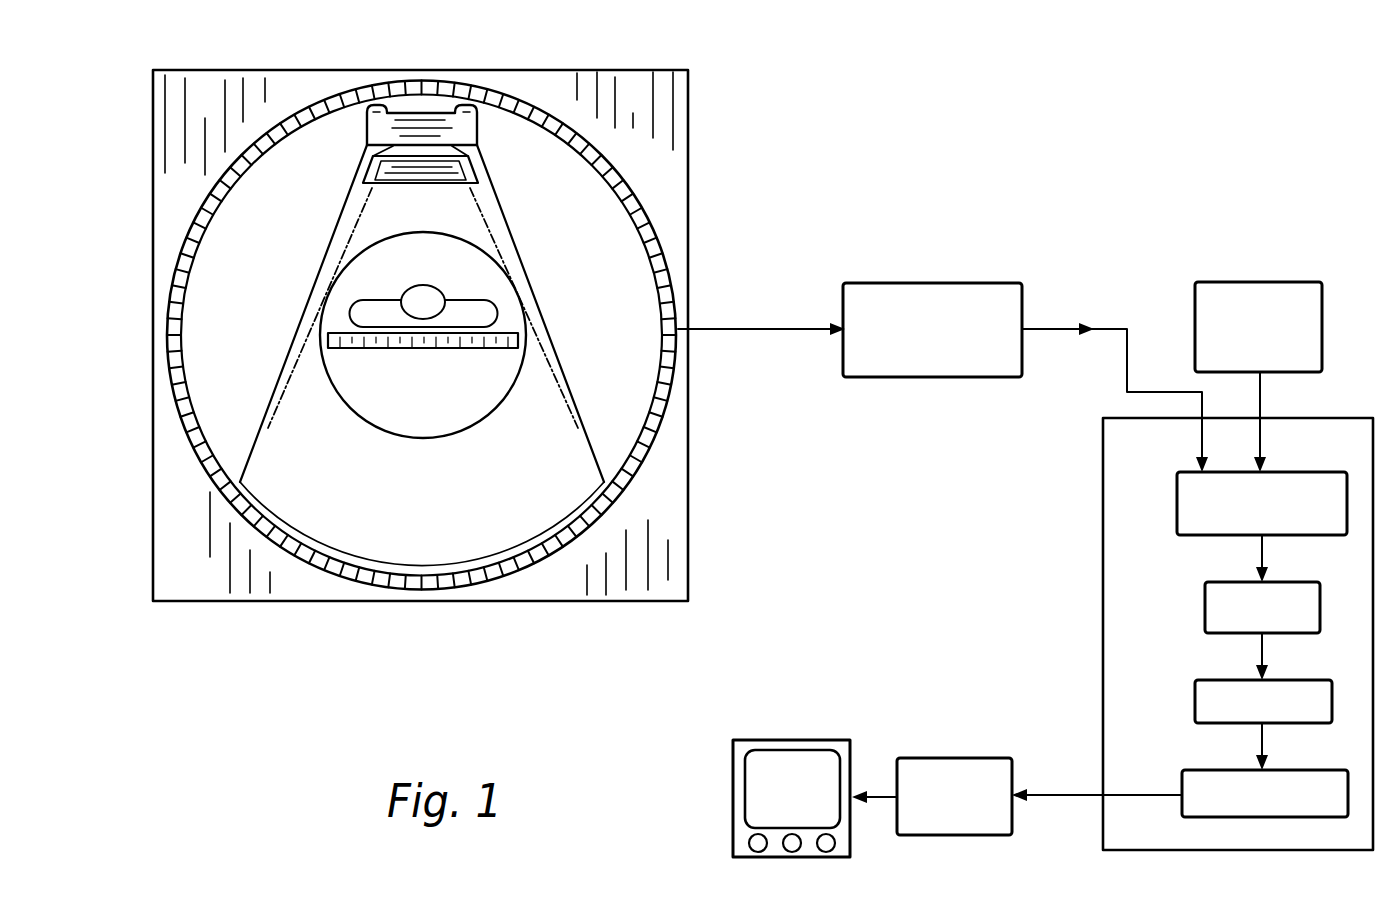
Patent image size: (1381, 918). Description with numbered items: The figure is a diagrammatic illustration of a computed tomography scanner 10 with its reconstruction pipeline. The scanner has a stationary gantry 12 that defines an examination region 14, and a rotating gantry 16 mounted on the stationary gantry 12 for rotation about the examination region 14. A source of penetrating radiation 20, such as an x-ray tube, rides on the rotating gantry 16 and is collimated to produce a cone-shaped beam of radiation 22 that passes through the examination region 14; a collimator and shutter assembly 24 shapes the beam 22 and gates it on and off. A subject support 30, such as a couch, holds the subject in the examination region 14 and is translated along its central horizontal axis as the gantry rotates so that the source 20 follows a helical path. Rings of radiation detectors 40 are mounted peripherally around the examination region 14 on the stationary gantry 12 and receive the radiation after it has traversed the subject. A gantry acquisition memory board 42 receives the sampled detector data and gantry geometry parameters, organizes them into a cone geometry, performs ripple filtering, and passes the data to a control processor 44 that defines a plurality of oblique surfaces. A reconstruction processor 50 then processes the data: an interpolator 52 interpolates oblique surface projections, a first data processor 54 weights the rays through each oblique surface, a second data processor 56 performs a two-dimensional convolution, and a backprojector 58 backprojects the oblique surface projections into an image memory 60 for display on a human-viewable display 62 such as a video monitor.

The CT scanner 10 is at (357, 634).
The stationary gantry 12 is at (608, 600).
The examination region 14 is at (434, 401).
The rotating gantry 16 is at (333, 239).
The source of penetrating radiation 20 is at (428, 130).
The cone-shaped beam of radiation 22 is at (500, 206).
The collimator and shutter assembly 24 is at (370, 170).
The subject support 30 is at (366, 348).
The radiation detectors 40 is at (615, 138).
The gantry acquisition memory board 42 is at (948, 283).
The control processor 44 is at (1258, 282).
The reconstruction processor 50 is at (1103, 630).
The interpolator 52 is at (1177, 505).
The first data processor 54 is at (1205, 610).
The second data processor 56 is at (1195, 706).
The backprojector 58 is at (1182, 780).
The image memory 60 is at (940, 758).
The human-viewable display 62 is at (792, 740).